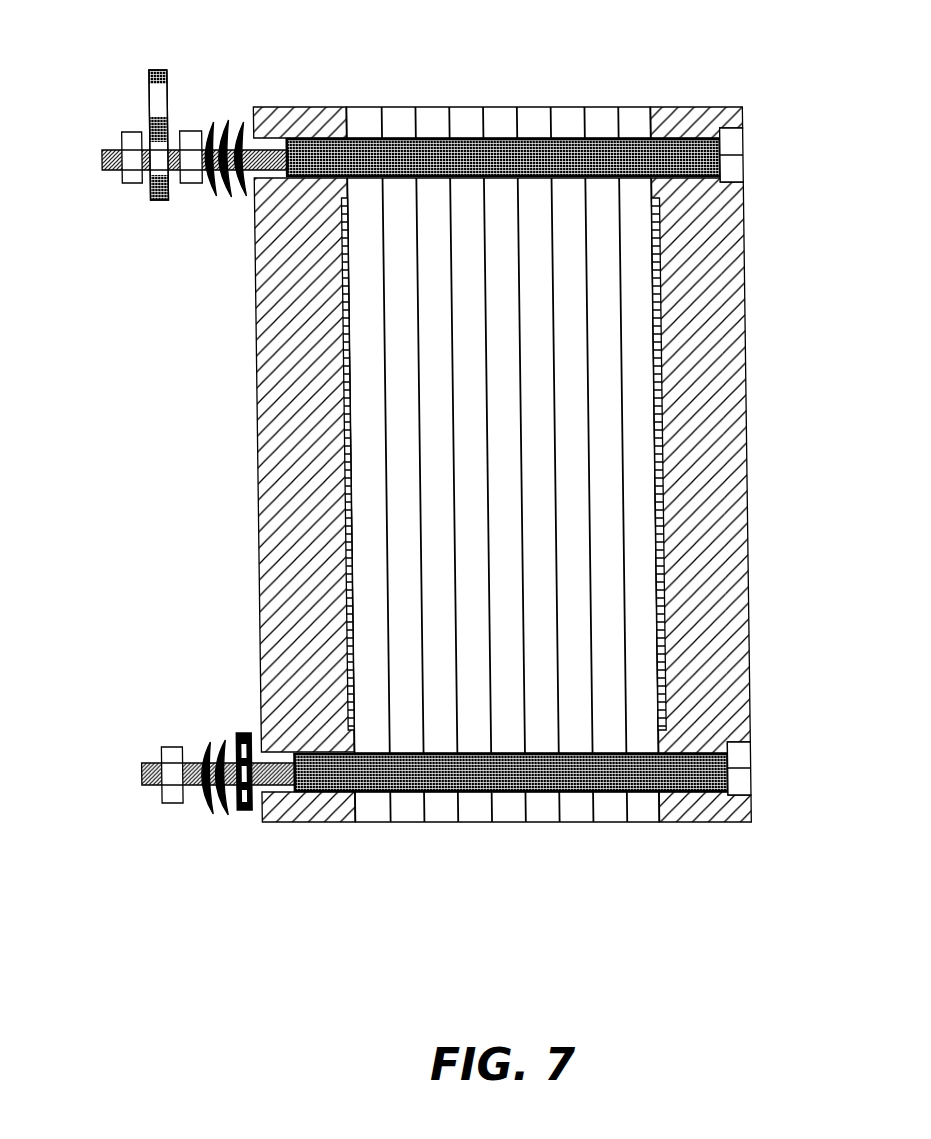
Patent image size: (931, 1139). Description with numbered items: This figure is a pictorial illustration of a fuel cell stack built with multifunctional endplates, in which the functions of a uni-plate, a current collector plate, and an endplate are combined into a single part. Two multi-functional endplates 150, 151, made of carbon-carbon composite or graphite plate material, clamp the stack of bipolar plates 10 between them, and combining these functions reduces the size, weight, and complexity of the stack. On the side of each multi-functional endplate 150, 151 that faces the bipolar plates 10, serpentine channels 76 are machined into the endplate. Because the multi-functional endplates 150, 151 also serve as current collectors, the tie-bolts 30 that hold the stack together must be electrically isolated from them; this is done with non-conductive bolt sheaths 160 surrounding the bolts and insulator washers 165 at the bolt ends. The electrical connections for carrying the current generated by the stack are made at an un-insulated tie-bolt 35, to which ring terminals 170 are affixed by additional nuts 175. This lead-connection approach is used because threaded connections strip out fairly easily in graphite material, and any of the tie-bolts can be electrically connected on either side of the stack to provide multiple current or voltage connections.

The bipolar plate 10 is at (647, 102).
The multi-functional endplate 150 is at (290, 106).
The multi-functional endplate 151 is at (697, 106).
The non-conductive bolt sheath 160 is at (700, 132).
The serpentine channel 76 is at (349, 668).
The un-insulated tie-bolt 35 is at (98, 162).
The tie-bolt 30 is at (132, 773).
The ring terminal 170 is at (159, 68).
The additional nut 175 is at (130, 186).
The insulator washer 165 is at (235, 811).